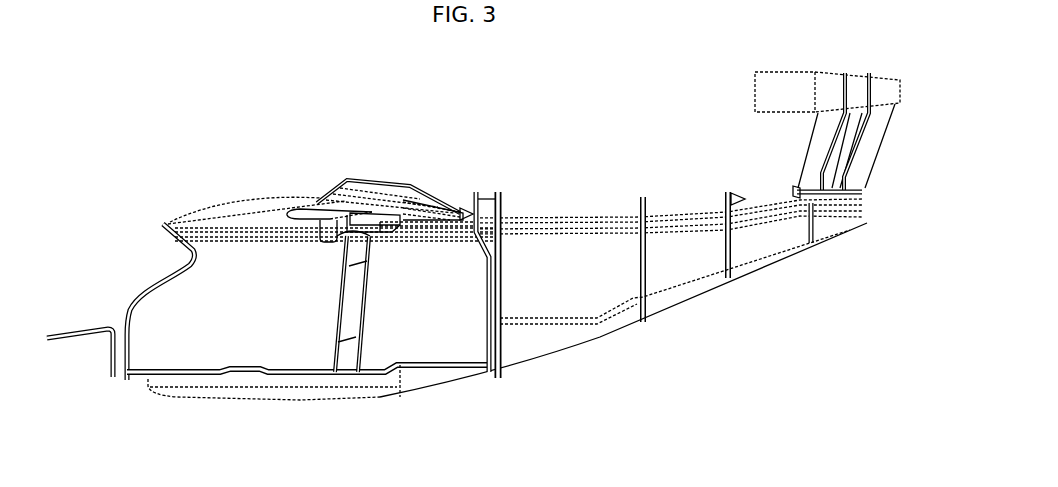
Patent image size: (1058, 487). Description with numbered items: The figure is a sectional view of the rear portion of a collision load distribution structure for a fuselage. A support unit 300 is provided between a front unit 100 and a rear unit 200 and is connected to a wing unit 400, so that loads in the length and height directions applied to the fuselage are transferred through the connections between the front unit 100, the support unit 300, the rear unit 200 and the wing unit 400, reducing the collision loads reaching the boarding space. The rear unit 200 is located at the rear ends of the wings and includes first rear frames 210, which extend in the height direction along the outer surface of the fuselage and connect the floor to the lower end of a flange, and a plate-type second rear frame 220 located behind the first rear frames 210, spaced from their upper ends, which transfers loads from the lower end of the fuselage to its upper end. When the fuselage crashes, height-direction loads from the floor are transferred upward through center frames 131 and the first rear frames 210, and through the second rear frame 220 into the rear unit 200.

The front unit 100 is at (145, 287).
The center frames 131 is at (345, 300).
The rear unit 200 is at (512, 205).
The first rear frames 210 is at (480, 375).
The second rear frame 220 is at (505, 352).
The support unit 300 is at (418, 224).
The wing unit 400 is at (357, 186).